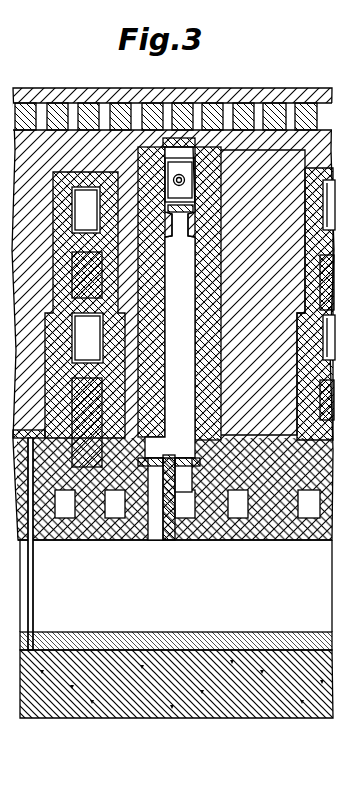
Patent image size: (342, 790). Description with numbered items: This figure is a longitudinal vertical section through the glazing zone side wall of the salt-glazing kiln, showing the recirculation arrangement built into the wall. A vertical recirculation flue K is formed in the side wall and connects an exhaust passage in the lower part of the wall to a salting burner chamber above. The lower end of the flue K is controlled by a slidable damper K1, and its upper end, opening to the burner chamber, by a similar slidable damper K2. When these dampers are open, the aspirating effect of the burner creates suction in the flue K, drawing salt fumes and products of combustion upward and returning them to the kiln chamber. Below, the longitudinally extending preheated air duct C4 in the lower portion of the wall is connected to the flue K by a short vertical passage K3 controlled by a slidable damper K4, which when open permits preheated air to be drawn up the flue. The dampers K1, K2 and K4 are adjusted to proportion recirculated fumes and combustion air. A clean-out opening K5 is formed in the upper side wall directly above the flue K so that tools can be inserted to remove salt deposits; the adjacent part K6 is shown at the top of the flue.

The vertical recirculation flue K is at (170, 302).
The slidable damper K1 is at (186, 458).
The slidable damper K2 is at (178, 216).
The short vertical passage K3 is at (155, 530).
The slidable damper K4 is at (157, 450).
The clean-out opening K5 is at (193, 152).
The cap K6 is at (168, 138).
The air duct C4 is at (176, 586).